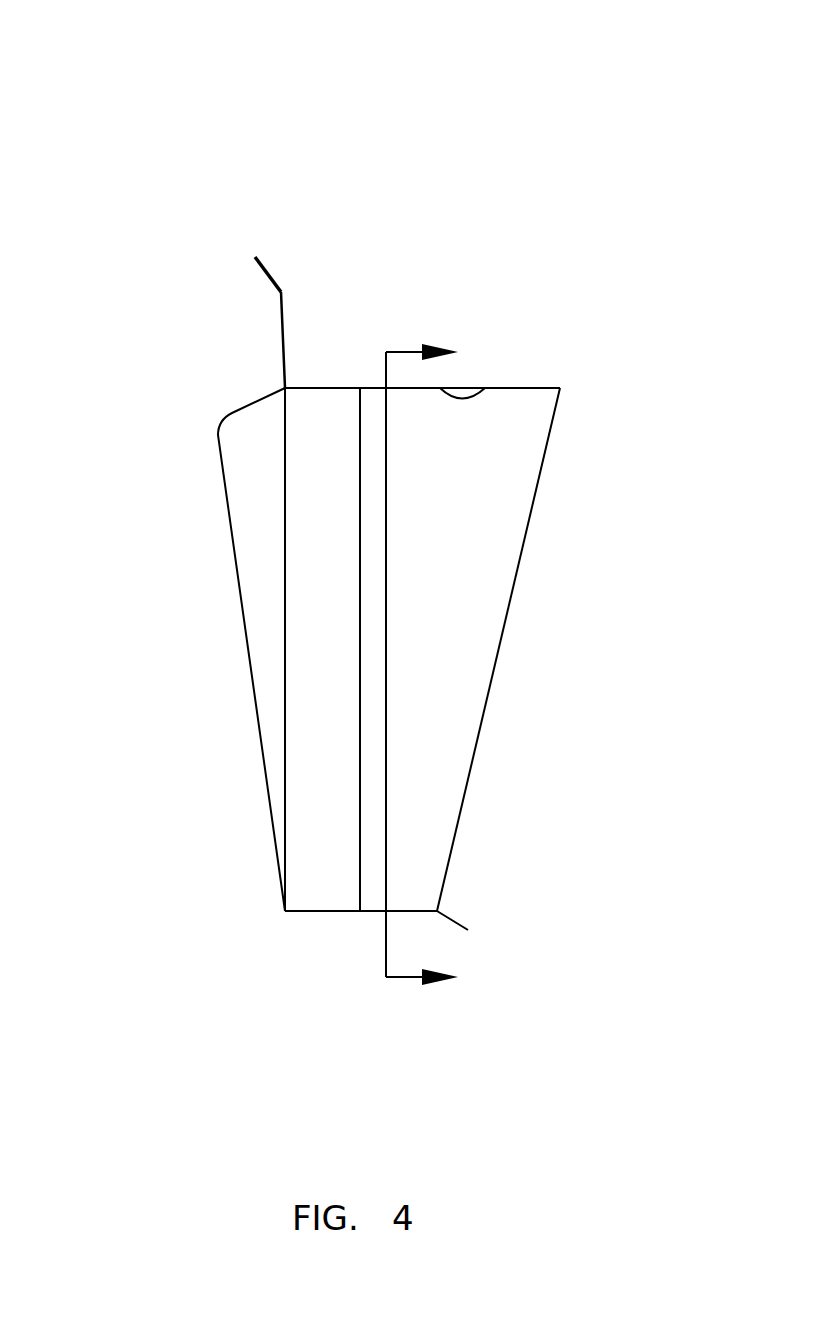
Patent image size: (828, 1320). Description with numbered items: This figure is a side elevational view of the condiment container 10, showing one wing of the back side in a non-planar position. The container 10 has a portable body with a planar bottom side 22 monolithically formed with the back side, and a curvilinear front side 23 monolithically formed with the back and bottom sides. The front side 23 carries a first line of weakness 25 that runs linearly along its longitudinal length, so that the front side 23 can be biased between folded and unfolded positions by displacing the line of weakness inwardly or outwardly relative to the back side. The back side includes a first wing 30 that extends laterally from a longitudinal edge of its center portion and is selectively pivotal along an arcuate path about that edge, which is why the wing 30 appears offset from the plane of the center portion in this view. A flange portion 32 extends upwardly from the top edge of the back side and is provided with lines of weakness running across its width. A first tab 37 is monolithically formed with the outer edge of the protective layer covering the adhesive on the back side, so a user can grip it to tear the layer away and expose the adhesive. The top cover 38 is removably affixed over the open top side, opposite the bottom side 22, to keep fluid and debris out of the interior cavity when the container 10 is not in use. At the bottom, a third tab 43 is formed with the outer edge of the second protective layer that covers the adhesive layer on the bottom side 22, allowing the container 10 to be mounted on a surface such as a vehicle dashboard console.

The condiment container 10 is at (315, 90).
The bottom side 22 is at (320, 911).
The front side 23 is at (505, 679).
The first line of weakness 25 is at (358, 418).
The first wing 30 is at (253, 477).
The flange portion 32 is at (283, 290).
The first tab 37 is at (465, 392).
The top cover 38 is at (547, 388).
The third tab 43 is at (453, 915).